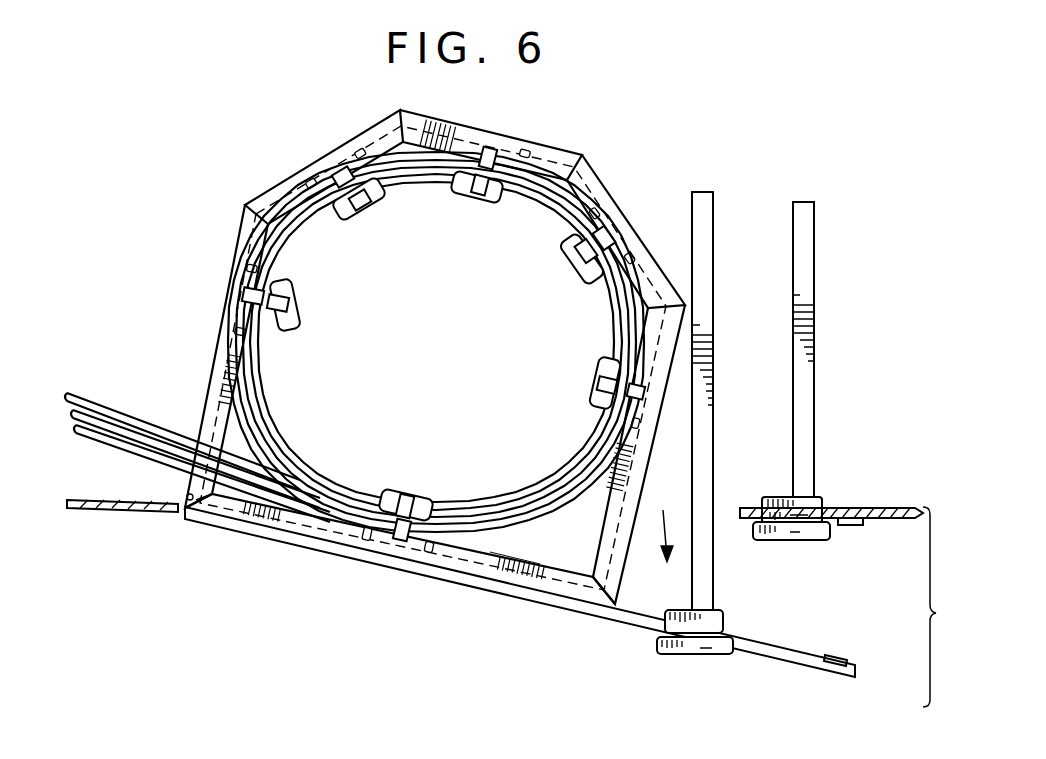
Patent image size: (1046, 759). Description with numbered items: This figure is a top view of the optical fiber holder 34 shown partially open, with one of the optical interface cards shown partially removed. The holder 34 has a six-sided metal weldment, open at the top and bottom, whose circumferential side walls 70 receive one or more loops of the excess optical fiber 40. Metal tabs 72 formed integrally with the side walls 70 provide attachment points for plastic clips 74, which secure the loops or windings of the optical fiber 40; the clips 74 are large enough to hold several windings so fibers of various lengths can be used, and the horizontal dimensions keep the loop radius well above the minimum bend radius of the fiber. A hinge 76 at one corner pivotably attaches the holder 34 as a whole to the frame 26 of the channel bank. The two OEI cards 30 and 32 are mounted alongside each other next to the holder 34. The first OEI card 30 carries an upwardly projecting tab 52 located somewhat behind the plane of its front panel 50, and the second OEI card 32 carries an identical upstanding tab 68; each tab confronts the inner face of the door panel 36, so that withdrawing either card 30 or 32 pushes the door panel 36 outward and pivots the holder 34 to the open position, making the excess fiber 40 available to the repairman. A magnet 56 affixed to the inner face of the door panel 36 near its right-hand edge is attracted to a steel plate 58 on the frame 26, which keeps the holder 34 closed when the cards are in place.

The frame 26 is at (890, 507).
The OEI card 30 is at (718, 284).
The OEI card 32 is at (821, 284).
The optical fiber holder 34 is at (270, 552).
The door panel 36 is at (400, 580).
The optical fiber 40 is at (292, 432).
The OEI card front panel 50 is at (690, 655).
The tab 52 is at (726, 612).
The magnet 56 is at (840, 655).
The steel plate 58 is at (850, 526).
The tab 68 is at (825, 499).
The side walls 70 is at (330, 165).
The metal tabs 72 is at (320, 240).
The plastic clips 74 is at (365, 215).
The hinge 76 is at (202, 520).